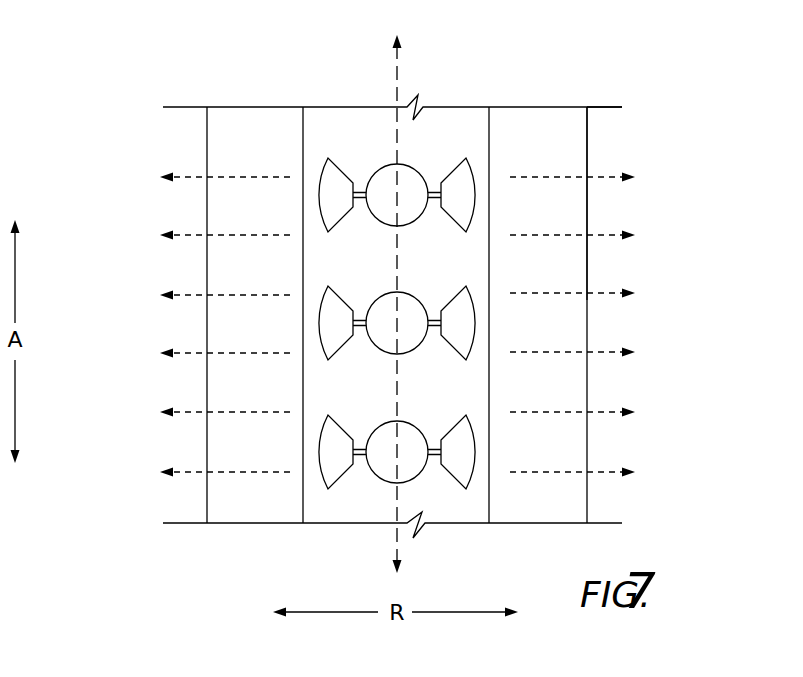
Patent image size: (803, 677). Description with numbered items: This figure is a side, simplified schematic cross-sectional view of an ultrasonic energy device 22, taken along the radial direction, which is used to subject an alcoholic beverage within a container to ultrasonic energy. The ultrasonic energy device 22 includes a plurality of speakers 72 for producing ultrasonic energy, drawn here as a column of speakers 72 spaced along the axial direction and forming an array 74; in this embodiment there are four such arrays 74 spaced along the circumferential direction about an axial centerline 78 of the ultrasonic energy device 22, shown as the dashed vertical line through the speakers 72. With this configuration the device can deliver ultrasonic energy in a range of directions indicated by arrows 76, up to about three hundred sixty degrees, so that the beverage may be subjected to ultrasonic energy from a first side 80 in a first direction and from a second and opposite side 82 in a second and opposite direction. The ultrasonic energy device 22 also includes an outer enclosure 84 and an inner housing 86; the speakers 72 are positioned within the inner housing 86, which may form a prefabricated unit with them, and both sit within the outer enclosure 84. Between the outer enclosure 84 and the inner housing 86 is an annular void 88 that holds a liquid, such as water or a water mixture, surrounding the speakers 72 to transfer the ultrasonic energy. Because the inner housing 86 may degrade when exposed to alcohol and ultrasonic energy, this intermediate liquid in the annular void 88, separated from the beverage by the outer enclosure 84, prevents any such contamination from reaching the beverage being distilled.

The ultrasonic energy device 22 is at (72, 195).
The speaker 72 is at (408, 176).
The array of speakers 74 is at (333, 138).
The arrows 76 is at (237, 357).
The axial centerline 78 is at (395, 72).
The first side 80 is at (195, 490).
The second side 82 is at (597, 455).
The outer enclosure 84 is at (587, 148).
The inner housing 86 is at (303, 252).
The annular void 88 is at (553, 142).